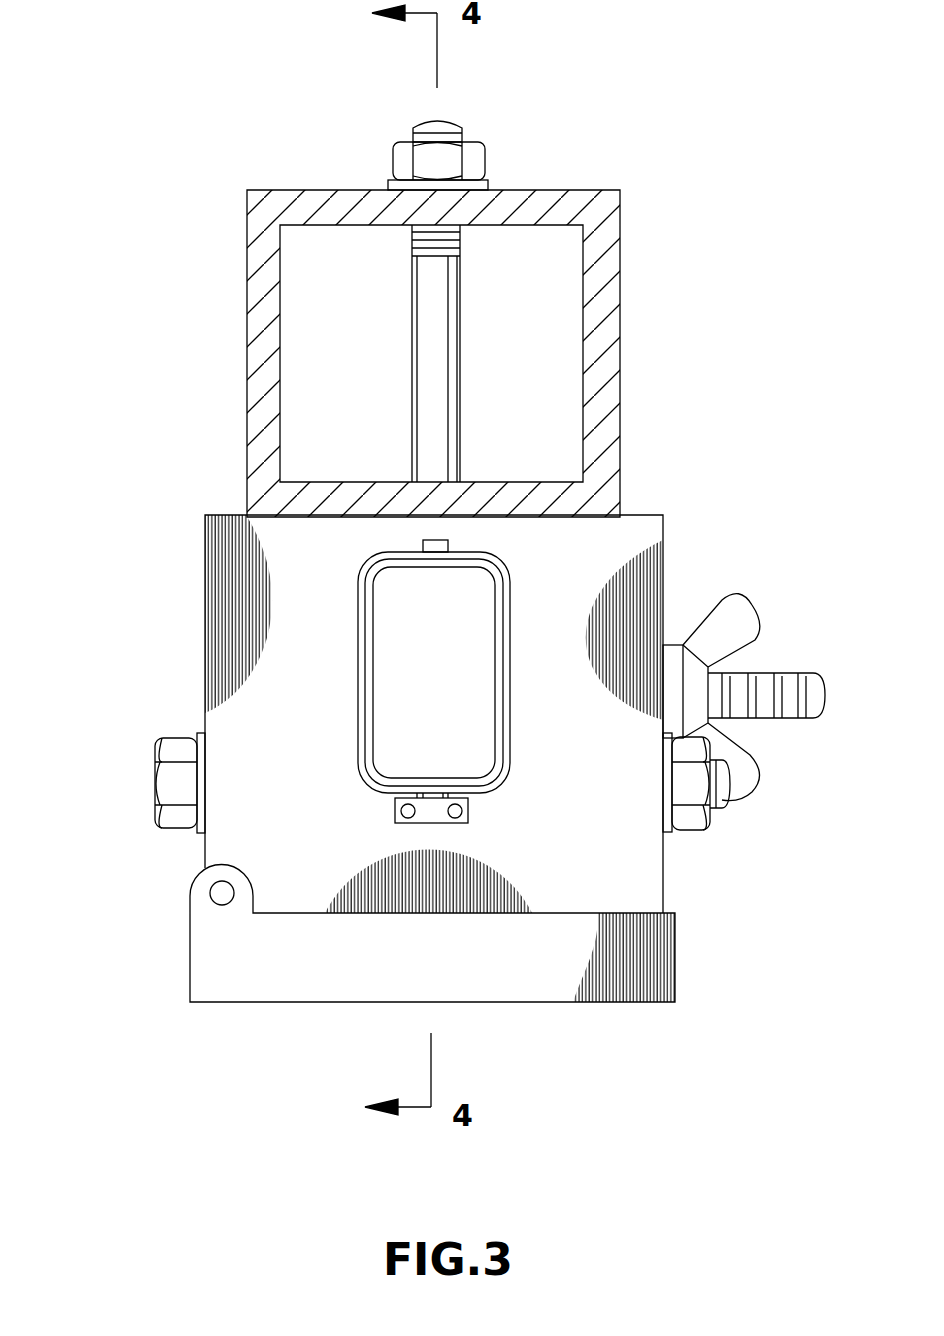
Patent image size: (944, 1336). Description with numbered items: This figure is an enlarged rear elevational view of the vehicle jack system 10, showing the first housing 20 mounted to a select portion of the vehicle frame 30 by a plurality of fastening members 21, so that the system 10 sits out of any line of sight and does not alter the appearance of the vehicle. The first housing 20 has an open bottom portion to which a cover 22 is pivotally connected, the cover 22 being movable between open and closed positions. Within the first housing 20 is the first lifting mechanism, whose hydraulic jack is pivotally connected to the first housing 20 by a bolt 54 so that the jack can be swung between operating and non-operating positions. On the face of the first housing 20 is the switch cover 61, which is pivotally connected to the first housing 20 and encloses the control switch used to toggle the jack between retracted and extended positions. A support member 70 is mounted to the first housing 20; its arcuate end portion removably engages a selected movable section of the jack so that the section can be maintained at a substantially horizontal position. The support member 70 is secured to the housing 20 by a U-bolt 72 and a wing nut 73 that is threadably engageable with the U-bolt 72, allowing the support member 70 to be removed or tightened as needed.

The system 10 is at (445, 554).
The first housing 20 is at (368, 714).
The fastening members 21 is at (452, 131).
The cover 22 is at (293, 983).
The frame 30 is at (612, 207).
The bolt 54 is at (165, 777).
The switch cover 61 is at (467, 608).
The support member 70 is at (746, 647).
The U-bolt 72 is at (755, 683).
The wing nut 73 is at (735, 615).